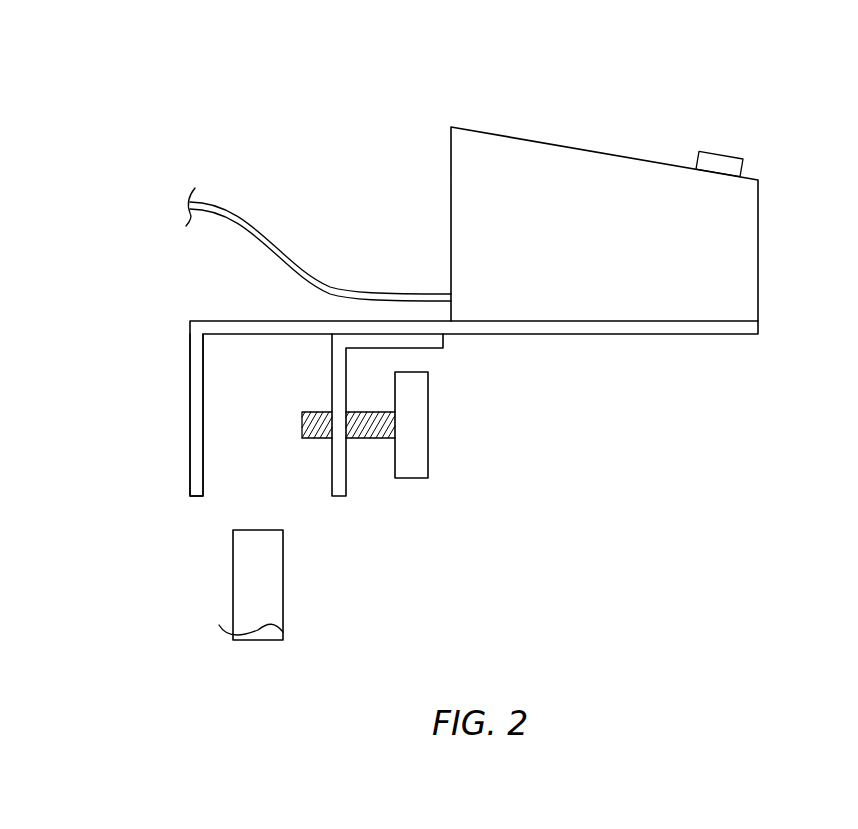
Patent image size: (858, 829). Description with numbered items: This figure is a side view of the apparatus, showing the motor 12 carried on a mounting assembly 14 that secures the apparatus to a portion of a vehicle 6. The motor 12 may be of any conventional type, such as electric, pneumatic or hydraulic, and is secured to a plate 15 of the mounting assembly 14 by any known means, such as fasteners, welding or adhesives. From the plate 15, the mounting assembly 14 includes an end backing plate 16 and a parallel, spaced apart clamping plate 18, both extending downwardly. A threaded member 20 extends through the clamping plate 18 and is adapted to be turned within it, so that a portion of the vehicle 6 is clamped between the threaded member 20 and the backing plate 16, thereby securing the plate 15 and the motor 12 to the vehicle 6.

The vehicle 6 is at (233, 588).
The motor 12 is at (598, 152).
The mounting assembly 14 is at (640, 440).
The plate 15 is at (652, 335).
The end backing plate 16 is at (190, 390).
The clamping plate 18 is at (346, 490).
The threaded member 20 is at (428, 410).